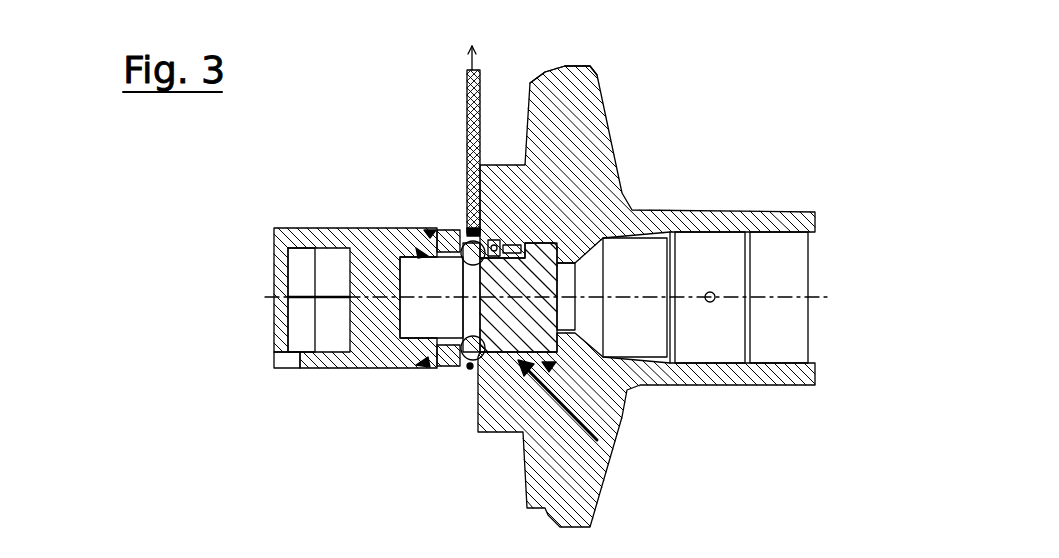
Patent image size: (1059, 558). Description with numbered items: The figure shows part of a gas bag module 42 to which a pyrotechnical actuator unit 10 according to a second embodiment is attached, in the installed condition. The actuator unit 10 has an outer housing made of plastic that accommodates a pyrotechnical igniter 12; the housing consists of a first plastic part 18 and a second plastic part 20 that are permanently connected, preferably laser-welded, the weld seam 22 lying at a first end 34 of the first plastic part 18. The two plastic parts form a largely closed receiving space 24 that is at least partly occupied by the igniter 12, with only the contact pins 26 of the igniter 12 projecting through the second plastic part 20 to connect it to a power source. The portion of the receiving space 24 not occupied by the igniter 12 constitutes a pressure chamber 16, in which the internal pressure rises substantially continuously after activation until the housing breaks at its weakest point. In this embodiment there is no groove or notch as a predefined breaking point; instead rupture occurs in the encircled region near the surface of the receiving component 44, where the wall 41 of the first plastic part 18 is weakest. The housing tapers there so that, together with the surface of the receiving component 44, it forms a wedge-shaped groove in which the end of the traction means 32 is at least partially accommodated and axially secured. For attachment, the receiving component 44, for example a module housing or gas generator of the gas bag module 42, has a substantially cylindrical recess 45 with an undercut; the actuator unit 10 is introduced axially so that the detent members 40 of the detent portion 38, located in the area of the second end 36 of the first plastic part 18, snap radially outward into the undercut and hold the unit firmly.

The pyrotechnical actuator unit 10 is at (470, 409).
The pyrotechnical igniter 12 is at (442, 292).
The pressure chamber 16 is at (473, 315).
The first plastic part 18 is at (297, 217).
The second plastic part 20 is at (273, 281).
The weld seam 22 is at (285, 379).
The receiving space 24 is at (422, 252).
The contact pins 26 is at (230, 300).
The traction means 32 is at (467, 155).
The first end 34 is at (285, 352).
The second end 36 is at (577, 285).
The detent portion 38 is at (680, 379).
The detent members 40 is at (303, 394).
The wall 41 is at (676, 220).
The gas bag module 42 is at (709, 76).
The receiving component 44 is at (577, 168).
The recess 45 is at (700, 430).